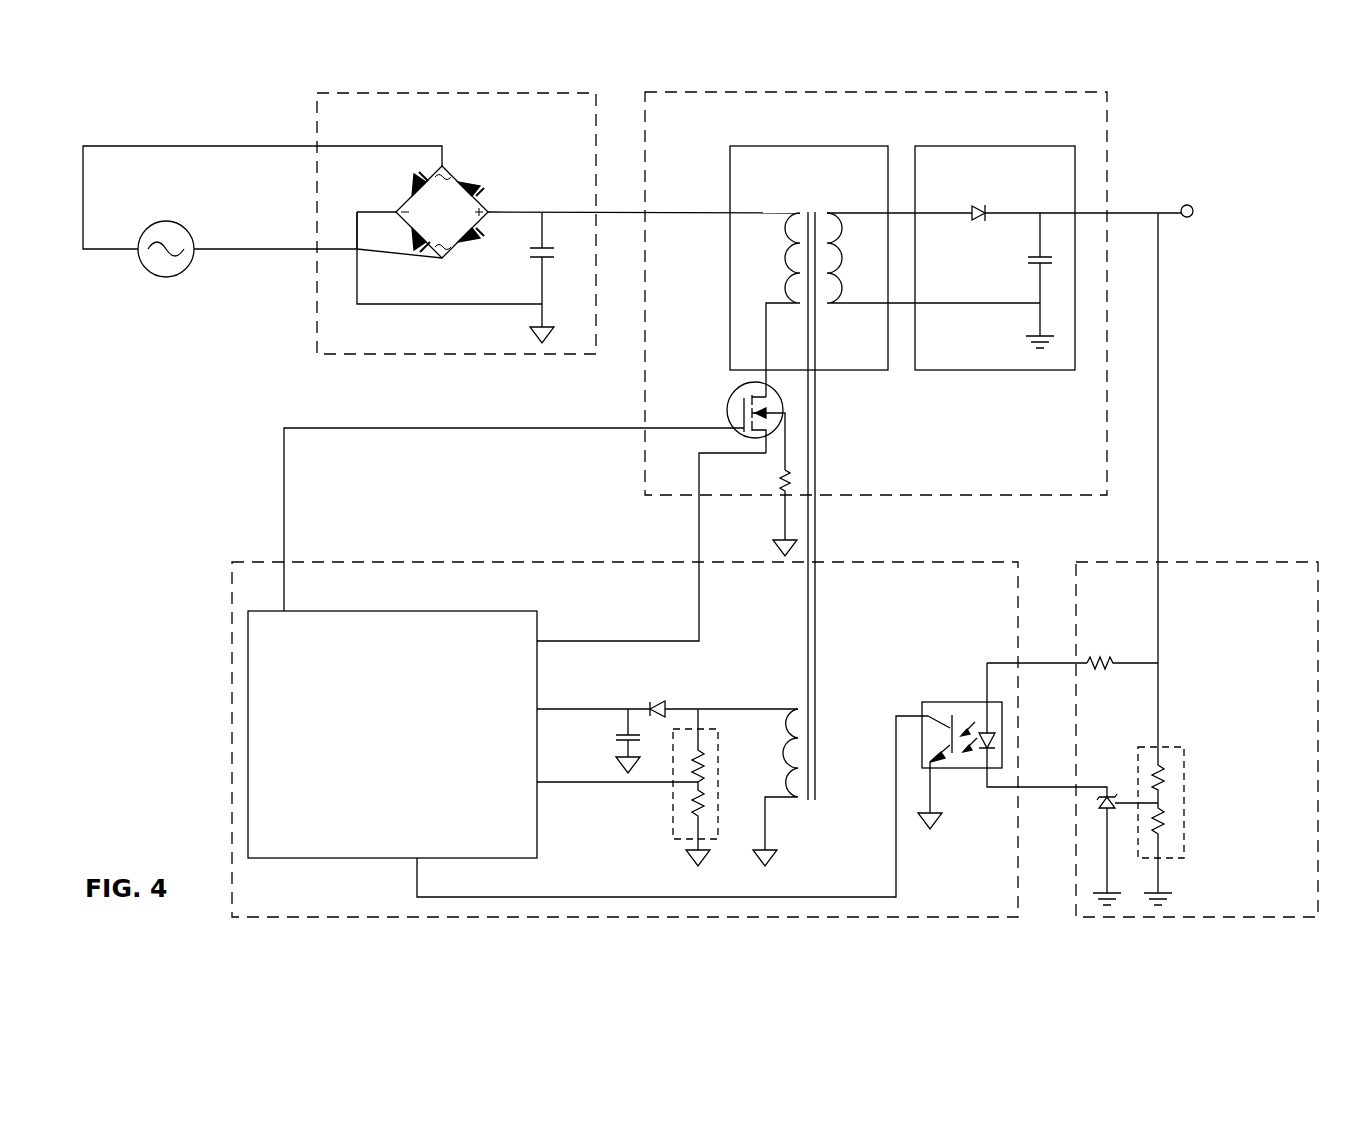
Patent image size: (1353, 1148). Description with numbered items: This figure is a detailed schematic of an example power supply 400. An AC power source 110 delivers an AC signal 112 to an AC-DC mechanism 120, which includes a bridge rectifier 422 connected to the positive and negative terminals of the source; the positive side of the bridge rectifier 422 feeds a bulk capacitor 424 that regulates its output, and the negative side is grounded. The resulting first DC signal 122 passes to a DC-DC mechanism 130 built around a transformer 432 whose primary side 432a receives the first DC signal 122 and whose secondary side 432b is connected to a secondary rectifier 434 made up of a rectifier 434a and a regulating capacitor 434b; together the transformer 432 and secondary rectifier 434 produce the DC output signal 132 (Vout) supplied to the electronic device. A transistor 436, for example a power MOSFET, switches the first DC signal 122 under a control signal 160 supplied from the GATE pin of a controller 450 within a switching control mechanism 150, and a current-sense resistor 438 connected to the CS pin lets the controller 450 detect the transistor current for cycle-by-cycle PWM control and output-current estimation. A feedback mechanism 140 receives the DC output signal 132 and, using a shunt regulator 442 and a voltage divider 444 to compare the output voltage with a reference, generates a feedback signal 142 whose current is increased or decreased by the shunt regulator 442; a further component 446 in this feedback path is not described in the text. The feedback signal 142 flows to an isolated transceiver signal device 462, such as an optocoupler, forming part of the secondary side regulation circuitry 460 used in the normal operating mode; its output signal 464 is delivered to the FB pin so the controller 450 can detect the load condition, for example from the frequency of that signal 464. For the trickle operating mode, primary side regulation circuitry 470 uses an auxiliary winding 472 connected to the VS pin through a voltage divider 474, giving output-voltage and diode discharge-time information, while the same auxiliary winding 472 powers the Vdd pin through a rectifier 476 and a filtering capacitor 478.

The power conversion system 400 is at (300, 113).
The AC power source 110 is at (170, 222).
The AC signal 112 is at (255, 257).
The AC-DC mechanism 120 is at (572, 108).
The first DC signal 122 is at (624, 210).
The DC-DC mechanism 130 is at (995, 106).
The DC output signal 132 is at (1141, 211).
The feedback mechanism 140 is at (1320, 573).
The feedback signal 142 is at (1050, 662).
The switching control mechanism 150 is at (680, 572).
The control signal 160 is at (560, 428).
The bridge rectifier 422 is at (455, 247).
The bulk capacitor 424 is at (556, 250).
The transformer 432 is at (853, 473).
The primary side 432a is at (745, 257).
The secondary side 432b is at (878, 260).
The secondary rectifier 434 is at (1048, 280).
The rectifier 434a is at (1058, 258).
The regulating capacitor 434b is at (978, 208).
The transistor 436 is at (735, 385).
The current-sense resistor 438 is at (780, 475).
The shunt regulator 442 is at (1185, 800).
The voltage divider 444 is at (1097, 793).
The feedback resistor 446 is at (1110, 668).
The controller 450 is at (507, 655).
The secondary side regulation circuitry 460 is at (912, 852).
The isolated transceiver signal device 462 is at (955, 702).
The output signal 464 is at (860, 894).
The primary side regulation circuitry 470 is at (840, 680).
The auxiliary winding 472 is at (800, 707).
The voltage divider 474 is at (672, 818).
The rectifier 476 is at (665, 702).
The filtering capacitor 478 is at (620, 728).